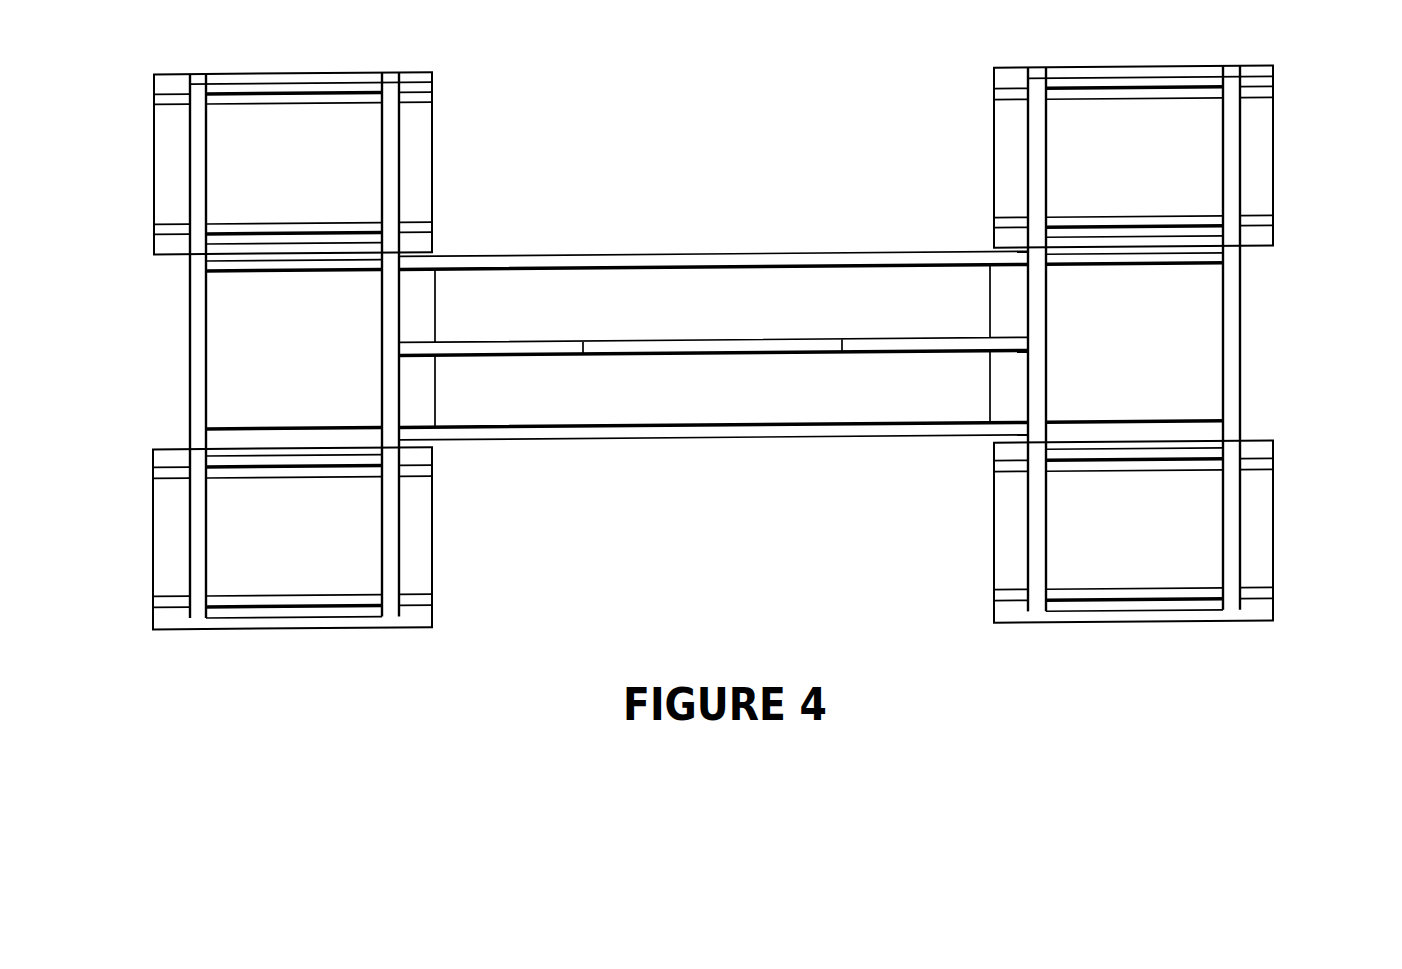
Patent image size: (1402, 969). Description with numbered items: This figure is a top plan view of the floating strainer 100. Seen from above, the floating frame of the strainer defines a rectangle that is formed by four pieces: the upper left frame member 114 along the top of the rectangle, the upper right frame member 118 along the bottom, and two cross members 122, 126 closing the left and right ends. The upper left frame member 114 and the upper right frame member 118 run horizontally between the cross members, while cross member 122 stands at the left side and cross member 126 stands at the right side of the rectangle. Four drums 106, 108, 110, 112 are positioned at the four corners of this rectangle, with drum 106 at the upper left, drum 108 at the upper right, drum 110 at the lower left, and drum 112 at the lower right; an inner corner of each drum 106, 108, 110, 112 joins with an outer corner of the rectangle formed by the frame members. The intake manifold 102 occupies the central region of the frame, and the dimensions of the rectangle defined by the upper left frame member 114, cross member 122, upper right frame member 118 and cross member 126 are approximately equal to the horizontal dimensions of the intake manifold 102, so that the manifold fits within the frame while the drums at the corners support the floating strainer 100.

The floating strainer 100 is at (668, 514).
The intake manifold 102 is at (591, 283).
The drum 106 is at (428, 147).
The drum 108 is at (1270, 178).
The drum 110 is at (423, 548).
The drum 112 is at (1263, 548).
The upper left frame member 114 is at (833, 260).
The upper right frame member 118 is at (738, 435).
The cross member 122 is at (388, 347).
The cross member 126 is at (1040, 345).